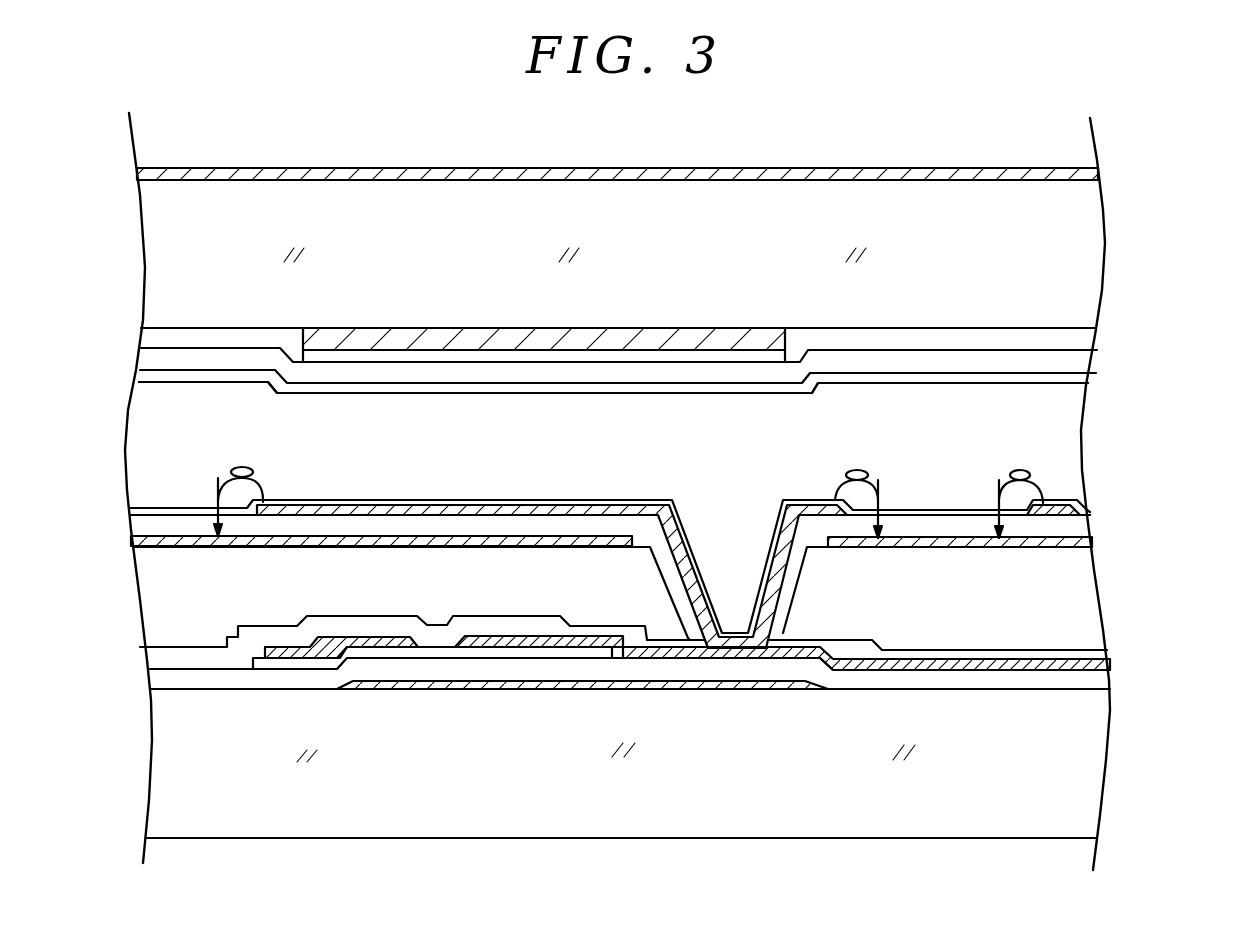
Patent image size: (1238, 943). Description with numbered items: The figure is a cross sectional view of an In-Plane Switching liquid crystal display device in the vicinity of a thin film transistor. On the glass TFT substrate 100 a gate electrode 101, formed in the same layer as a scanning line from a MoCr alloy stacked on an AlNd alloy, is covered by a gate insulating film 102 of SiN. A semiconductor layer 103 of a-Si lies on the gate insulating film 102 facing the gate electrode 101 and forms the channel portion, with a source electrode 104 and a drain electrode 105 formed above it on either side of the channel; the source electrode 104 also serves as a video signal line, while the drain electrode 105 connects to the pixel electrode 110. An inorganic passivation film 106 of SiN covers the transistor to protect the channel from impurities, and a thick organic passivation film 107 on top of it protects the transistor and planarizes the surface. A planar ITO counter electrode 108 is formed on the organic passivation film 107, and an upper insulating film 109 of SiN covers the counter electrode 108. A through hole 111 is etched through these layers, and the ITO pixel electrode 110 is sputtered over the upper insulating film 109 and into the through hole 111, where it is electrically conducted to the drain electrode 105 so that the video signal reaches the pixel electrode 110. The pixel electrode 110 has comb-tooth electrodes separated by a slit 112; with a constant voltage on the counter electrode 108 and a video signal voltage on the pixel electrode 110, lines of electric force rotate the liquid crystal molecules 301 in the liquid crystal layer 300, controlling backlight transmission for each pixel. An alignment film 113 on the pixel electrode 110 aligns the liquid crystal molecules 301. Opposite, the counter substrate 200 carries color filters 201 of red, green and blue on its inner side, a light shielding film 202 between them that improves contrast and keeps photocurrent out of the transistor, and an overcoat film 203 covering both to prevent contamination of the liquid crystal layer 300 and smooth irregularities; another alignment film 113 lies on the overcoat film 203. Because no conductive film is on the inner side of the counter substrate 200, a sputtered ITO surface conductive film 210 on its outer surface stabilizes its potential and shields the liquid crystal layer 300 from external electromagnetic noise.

The TFT substrate 100 is at (225, 802).
The gate electrode 101 is at (437, 683).
The gate insulating film 102 is at (155, 680).
The semiconductor layer 103 is at (520, 652).
The source electrode 104 is at (368, 645).
The drain electrode 105 is at (603, 643).
The inorganic passivation film 106 is at (160, 662).
The organic passivation film 107 is at (148, 598).
The counter electrode 108 is at (132, 540).
The upper insulating film 109 is at (140, 522).
The pixel electrode 110 is at (563, 507).
The through hole 111 is at (740, 650).
The slit 112 is at (928, 510).
The alignment film 113 is at (1075, 382).
The counter substrate 200 is at (1068, 248).
The color filter 201 is at (631, 360).
The light shielding film 202 is at (510, 335).
The overcoat film 203 is at (1078, 363).
The surface conductive film 210 is at (967, 168).
The liquid crystal layer 300 is at (1075, 402).
The liquid crystal molecule 301 is at (1018, 470).